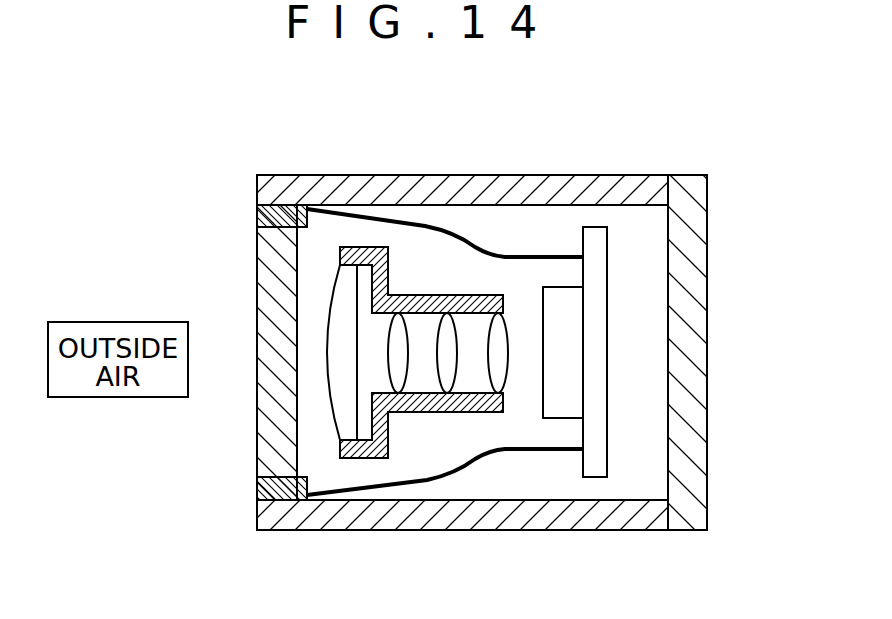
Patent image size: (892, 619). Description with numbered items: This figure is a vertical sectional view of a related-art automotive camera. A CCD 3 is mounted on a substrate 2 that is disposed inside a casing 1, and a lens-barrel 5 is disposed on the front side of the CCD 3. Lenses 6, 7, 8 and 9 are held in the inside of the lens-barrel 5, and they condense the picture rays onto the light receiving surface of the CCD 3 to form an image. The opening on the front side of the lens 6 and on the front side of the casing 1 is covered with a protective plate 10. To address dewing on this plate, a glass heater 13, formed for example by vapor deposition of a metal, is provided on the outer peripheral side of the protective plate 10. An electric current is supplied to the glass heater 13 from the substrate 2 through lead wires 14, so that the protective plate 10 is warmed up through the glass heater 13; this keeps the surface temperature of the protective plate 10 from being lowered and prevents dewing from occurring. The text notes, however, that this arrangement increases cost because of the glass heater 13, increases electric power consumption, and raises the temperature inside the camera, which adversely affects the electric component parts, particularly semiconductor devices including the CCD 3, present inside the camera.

The casing 1 is at (593, 184).
The substrate 2 is at (595, 415).
The CCD 3 is at (569, 310).
The lens-barrel 5 is at (432, 413).
The lens 6 is at (335, 400).
The lens 7 is at (403, 352).
The lens 8 is at (450, 352).
The lens 9 is at (502, 352).
The protective plate 10 is at (272, 233).
The glass heater 13 is at (270, 491).
The lead wires 14 is at (533, 449).